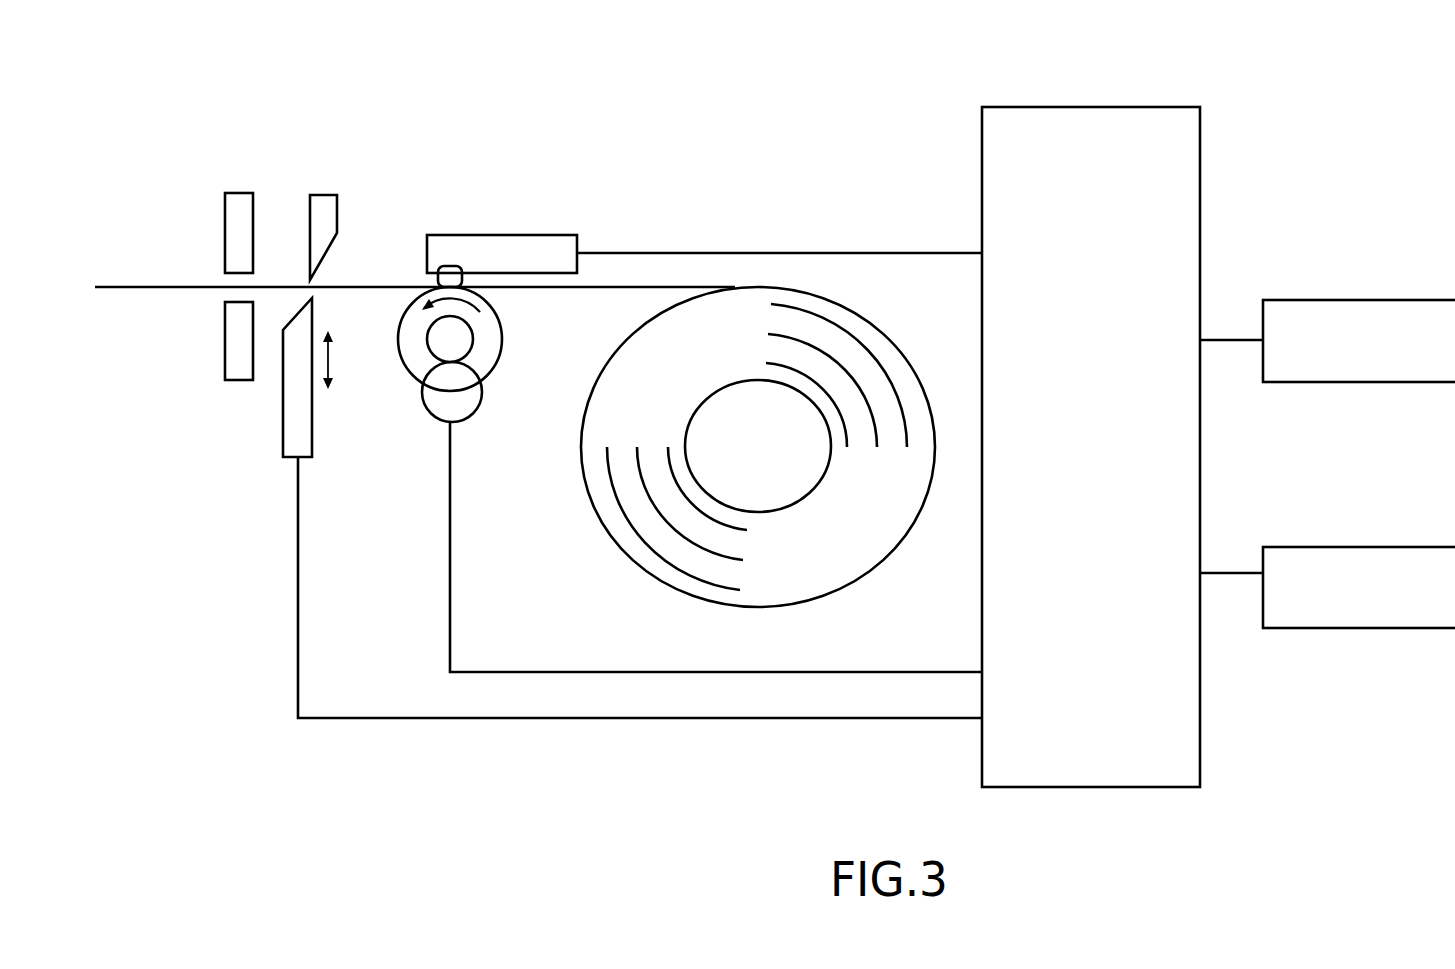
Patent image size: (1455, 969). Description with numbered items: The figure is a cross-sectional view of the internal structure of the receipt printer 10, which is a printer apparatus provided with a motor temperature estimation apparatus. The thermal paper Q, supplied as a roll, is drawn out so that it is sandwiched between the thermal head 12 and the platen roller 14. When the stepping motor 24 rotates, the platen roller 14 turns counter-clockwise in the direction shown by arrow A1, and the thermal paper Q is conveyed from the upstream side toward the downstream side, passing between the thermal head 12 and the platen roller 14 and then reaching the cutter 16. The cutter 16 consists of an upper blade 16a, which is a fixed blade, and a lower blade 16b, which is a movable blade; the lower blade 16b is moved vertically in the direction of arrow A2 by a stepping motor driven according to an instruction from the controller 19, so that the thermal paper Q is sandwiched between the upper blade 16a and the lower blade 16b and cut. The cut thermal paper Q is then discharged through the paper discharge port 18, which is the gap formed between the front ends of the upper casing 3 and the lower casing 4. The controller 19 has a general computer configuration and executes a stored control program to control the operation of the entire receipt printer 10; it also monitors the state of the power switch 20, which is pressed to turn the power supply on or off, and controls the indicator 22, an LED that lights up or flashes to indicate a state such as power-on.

The receipt printer 10 is at (466, 82).
The upper casing 3 is at (225, 216).
The lower casing 4 is at (225, 338).
The thermal head 12 is at (542, 232).
The platen roller 14 is at (504, 340).
The cutter 16 is at (328, 183).
The upper blade 16a is at (338, 206).
The lower blade 16b is at (316, 302).
The paper discharge port 18 is at (210, 273).
The controller 19 is at (1165, 106).
The power switch 20 is at (1407, 300).
The indicator 22 is at (1407, 547).
The stepping motor 24 is at (480, 396).
The arrow A1 is at (421, 297).
The arrow A2 is at (347, 360).
The thermal paper Q is at (640, 540).